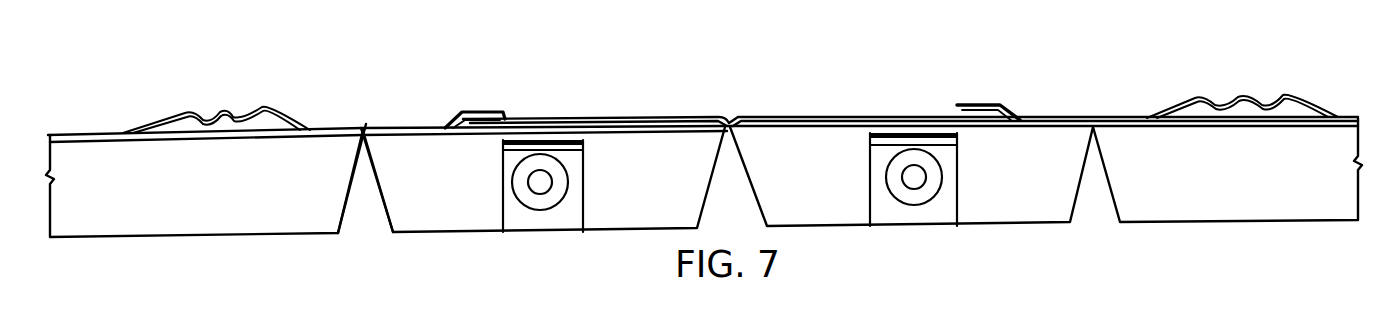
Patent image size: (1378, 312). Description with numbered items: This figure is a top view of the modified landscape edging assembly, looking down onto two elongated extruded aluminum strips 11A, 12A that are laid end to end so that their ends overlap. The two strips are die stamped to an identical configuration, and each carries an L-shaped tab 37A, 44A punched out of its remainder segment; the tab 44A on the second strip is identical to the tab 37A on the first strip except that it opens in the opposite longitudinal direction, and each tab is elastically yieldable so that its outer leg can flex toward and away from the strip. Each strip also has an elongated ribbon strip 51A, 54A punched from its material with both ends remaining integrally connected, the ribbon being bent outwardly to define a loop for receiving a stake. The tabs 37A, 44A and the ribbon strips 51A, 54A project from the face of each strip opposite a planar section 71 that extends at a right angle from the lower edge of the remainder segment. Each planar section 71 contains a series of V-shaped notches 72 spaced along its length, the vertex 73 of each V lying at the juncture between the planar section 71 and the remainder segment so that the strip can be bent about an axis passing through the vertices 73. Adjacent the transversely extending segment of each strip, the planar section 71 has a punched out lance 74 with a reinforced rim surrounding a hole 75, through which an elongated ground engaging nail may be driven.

The elongated strip 11A is at (403, 116).
The elongated strip 12A is at (1053, 110).
The tab 37A is at (487, 100).
The tab 44A is at (982, 103).
The elongated ribbon strip 51A is at (178, 106).
The elongated ribbon strip 54A is at (1282, 81).
The planar section 71 is at (288, 218).
The V-shaped notch 72 is at (363, 219).
The vertex 73 is at (365, 137).
The punched out lance 74 is at (563, 220).
The hole 75 is at (547, 183).